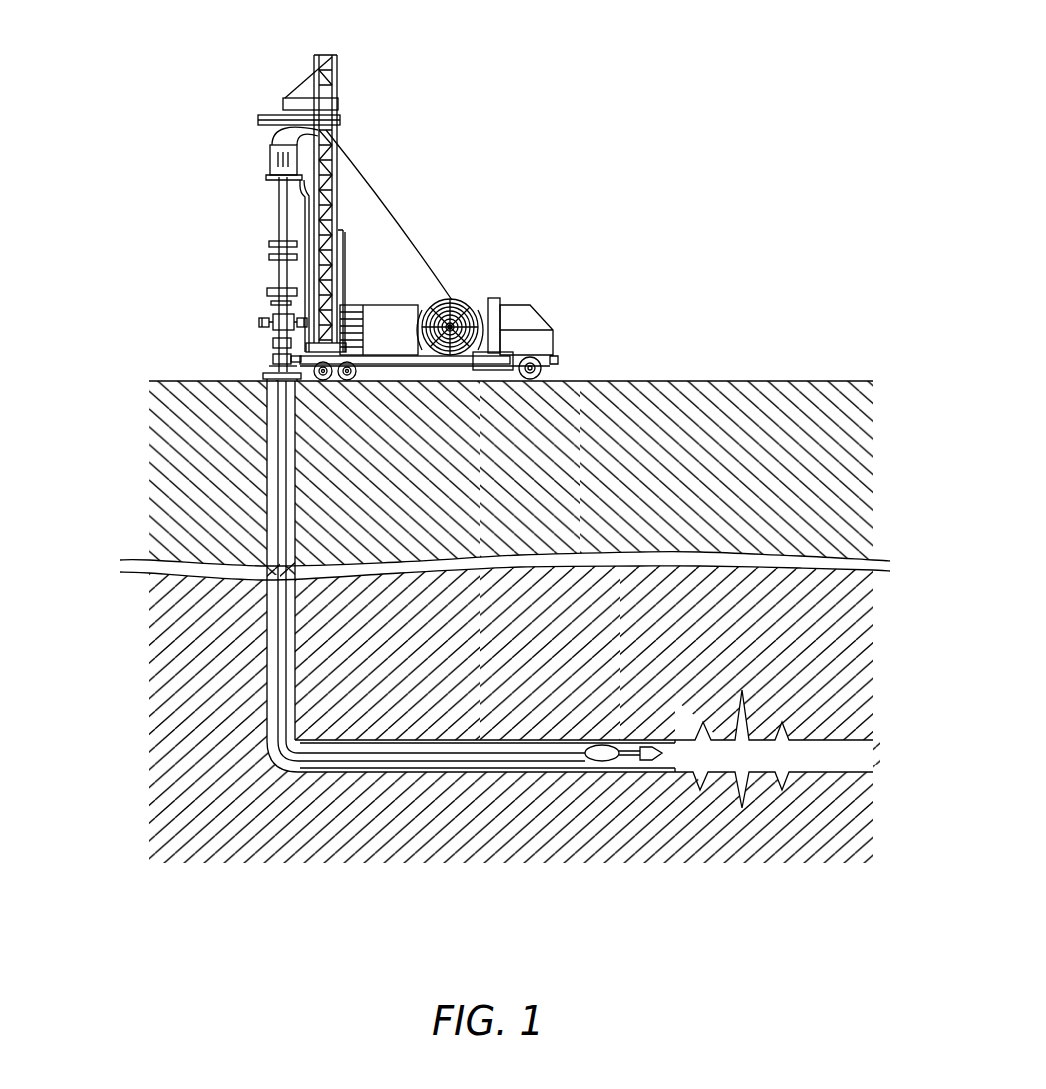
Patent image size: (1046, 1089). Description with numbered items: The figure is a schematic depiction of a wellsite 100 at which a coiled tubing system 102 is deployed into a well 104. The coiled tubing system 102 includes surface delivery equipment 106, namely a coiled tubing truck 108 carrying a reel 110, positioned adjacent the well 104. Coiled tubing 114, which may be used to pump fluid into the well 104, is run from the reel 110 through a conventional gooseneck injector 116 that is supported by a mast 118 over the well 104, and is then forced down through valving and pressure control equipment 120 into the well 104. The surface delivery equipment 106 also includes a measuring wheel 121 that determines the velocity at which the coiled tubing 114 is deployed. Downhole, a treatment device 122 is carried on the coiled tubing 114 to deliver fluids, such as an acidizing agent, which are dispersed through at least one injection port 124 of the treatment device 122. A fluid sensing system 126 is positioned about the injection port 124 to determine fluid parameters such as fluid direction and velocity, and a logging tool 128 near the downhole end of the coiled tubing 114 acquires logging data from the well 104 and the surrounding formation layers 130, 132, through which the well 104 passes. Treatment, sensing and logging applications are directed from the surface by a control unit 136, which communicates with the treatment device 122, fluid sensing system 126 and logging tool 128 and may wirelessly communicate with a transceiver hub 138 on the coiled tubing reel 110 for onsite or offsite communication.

The wellsite 100 is at (572, 60).
The coiled tubing system 102 is at (138, 300).
The well 104 is at (264, 757).
The surface delivery equipment 106 is at (460, 255).
The coiled tubing truck 108 is at (553, 340).
The reel 110 is at (473, 307).
The coiled tubing 114 is at (270, 638).
The gooseneck injector 116 is at (283, 105).
The mast 118 is at (327, 45).
The valving and pressure control equipment 120 is at (250, 298).
The measuring wheel 121 is at (453, 297).
The treatment device 122 is at (408, 757).
The injection port 124 is at (417, 755).
The fluid sensing system 126 is at (405, 768).
The logging tool 128 is at (570, 757).
The formation layer 130 is at (777, 437).
The formation layer 132 is at (564, 647).
The control unit 136 is at (377, 316).
The transceiver hub 138 is at (447, 297).